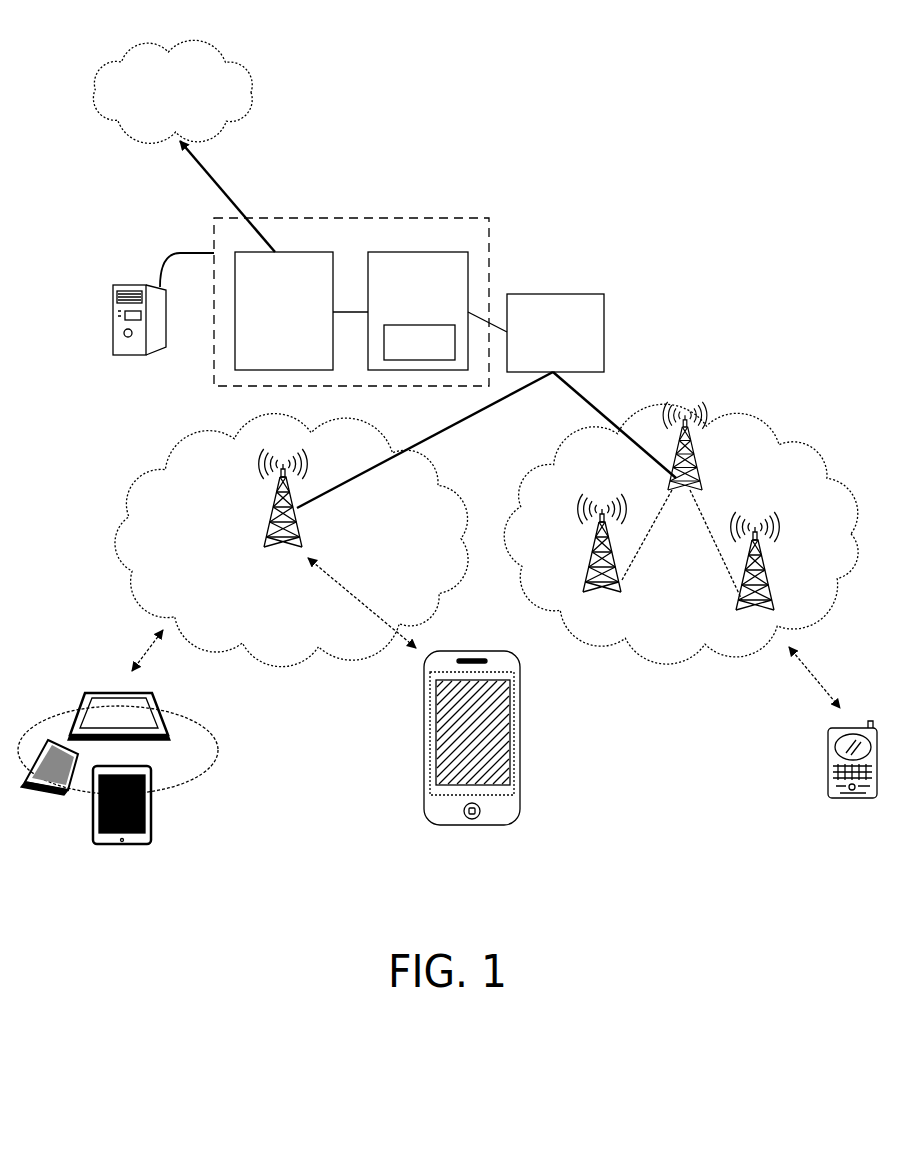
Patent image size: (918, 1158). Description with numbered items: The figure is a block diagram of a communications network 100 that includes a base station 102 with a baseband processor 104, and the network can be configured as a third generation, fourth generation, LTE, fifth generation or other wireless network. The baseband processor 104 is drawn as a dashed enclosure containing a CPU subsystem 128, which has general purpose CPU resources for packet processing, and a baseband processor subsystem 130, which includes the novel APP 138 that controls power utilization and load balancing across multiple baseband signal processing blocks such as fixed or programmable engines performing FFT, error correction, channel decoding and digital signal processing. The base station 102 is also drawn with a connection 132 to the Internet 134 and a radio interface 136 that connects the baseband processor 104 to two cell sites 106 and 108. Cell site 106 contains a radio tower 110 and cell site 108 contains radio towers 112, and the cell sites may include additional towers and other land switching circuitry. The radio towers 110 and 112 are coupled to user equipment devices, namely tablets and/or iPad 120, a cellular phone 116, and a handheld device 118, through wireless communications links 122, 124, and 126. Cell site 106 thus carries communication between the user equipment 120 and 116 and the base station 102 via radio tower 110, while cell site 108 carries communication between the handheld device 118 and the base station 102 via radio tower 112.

The communications network 100 is at (679, 56).
The base station 102 is at (112, 336).
The baseband processor 104 is at (387, 218).
The cell site 106 is at (176, 448).
The cell site 108 is at (577, 445).
The radio tower 110 is at (268, 545).
The radio tower 112 is at (700, 490).
The cellular phone 116 is at (520, 768).
The handheld device 118 is at (850, 730).
The tablets and/or iPad 120 is at (210, 770).
The wireless communications link 122 is at (150, 642).
The wireless communications link 124 is at (355, 595).
The wireless communications link 126 is at (822, 684).
The CPU subsystem 128 is at (292, 252).
The baseband processor subsystem 130 is at (428, 252).
The connection to Internet 132 is at (193, 160).
The Internet 134 is at (176, 50).
The radio interface 136 is at (578, 294).
The APP (adaptive power profile) 138 is at (418, 360).